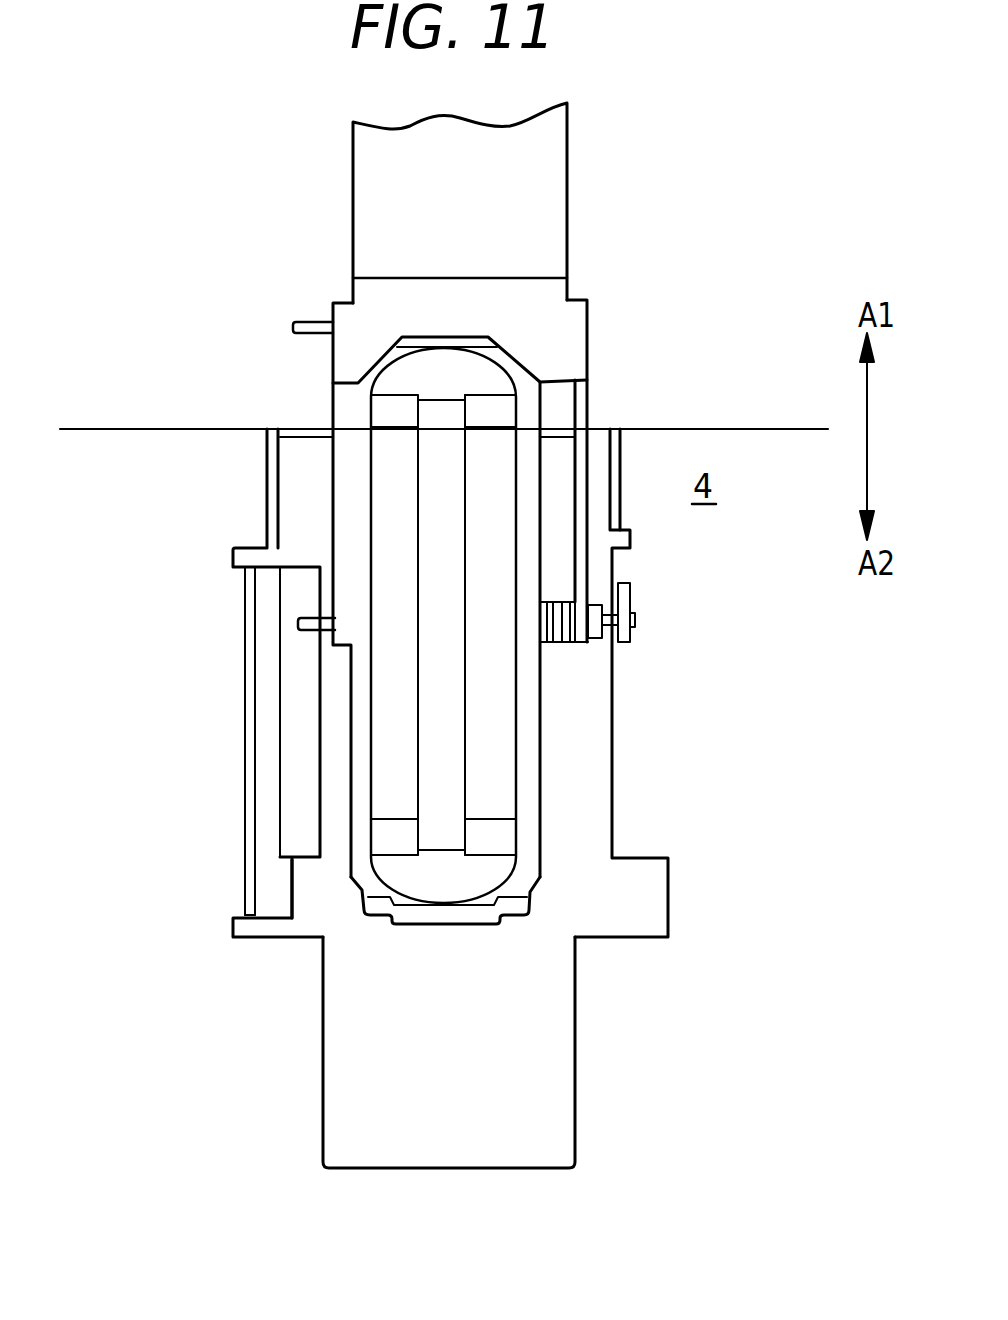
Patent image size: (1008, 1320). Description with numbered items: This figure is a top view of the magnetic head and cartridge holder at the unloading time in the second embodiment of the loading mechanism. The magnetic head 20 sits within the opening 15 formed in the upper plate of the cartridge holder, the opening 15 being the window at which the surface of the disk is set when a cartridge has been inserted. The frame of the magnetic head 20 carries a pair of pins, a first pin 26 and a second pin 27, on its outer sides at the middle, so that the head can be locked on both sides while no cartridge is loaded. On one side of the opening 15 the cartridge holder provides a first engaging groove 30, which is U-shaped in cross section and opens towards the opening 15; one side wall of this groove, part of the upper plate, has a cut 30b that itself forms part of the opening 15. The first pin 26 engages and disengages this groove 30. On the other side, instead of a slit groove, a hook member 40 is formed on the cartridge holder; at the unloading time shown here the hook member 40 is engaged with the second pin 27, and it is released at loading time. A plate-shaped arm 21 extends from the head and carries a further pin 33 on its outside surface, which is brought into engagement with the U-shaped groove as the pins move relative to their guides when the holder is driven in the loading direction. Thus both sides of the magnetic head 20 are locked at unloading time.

The opening 15 is at (548, 1085).
The magnetic head 20 is at (573, 823).
The plate-shaped arm 21 is at (548, 218).
The pin 26 is at (297, 623).
The pin 27 is at (632, 625).
The first engaging groove 30 is at (295, 740).
The cut 30b is at (291, 884).
The pin 33 is at (313, 322).
The hook member 40 is at (632, 592).